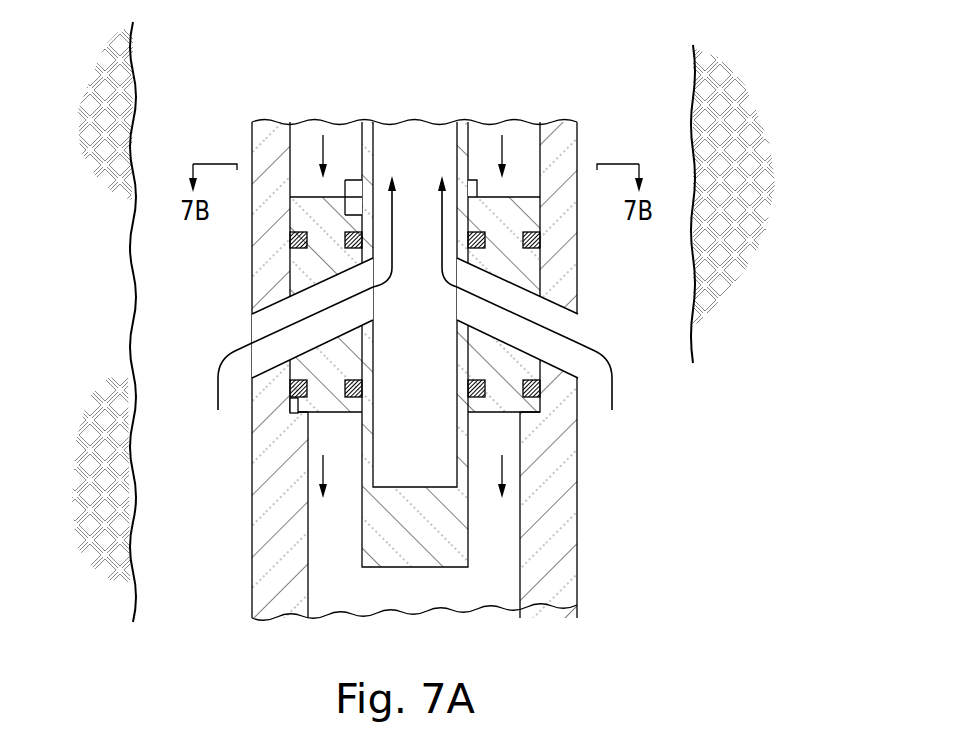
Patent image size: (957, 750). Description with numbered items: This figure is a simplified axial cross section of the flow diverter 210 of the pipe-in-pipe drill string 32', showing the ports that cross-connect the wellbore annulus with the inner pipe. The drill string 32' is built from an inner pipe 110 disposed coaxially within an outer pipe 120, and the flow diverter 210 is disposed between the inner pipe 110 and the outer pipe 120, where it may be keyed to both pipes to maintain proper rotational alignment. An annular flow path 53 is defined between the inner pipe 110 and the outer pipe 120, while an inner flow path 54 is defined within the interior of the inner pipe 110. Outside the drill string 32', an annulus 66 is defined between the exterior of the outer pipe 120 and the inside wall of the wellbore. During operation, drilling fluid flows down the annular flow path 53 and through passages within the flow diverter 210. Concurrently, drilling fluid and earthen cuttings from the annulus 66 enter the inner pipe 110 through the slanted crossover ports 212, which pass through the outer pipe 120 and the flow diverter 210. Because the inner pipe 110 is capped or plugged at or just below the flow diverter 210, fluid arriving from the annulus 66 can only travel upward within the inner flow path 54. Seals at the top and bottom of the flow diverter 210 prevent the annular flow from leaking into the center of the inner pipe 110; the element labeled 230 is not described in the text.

The annular flow path 53 is at (303, 127).
The inner flow path 54 is at (418, 127).
The pipe-in-pipe drill string 32' is at (437, 76).
The flow diverter 210 is at (290, 275).
The crossover ports 212 is at (563, 305).
The seal element 230 is at (295, 414).
The inner pipe 110 is at (468, 432).
The outer pipe 120 is at (578, 513).
The annulus 66 is at (203, 532).